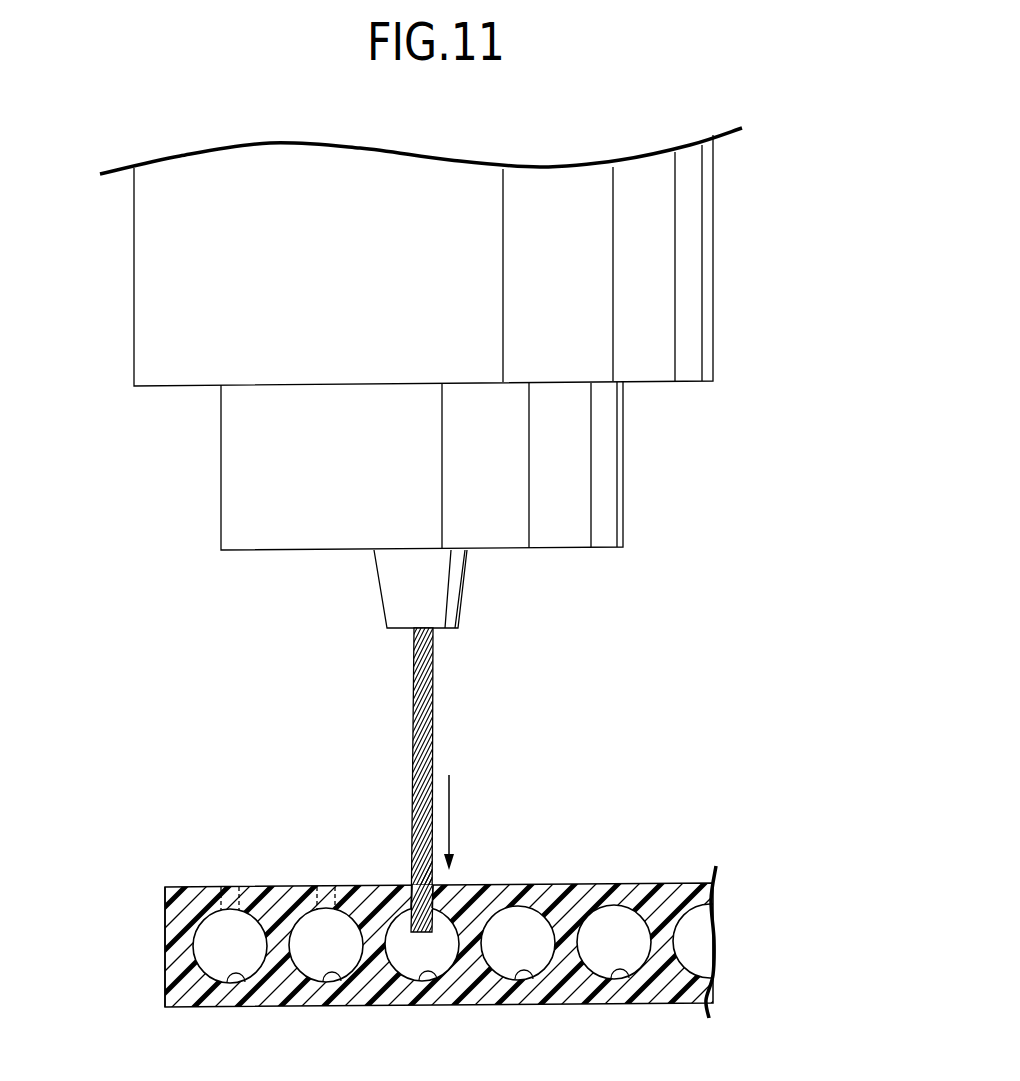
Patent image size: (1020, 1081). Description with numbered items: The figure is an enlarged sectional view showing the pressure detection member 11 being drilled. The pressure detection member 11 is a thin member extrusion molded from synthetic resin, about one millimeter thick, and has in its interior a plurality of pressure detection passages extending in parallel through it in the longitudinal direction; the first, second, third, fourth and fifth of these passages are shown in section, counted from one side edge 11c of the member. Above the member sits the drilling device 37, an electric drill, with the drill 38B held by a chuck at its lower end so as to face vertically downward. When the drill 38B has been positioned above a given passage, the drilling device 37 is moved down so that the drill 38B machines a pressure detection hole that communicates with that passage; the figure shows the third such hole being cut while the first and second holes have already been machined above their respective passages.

The drilling device 37 is at (158, 316).
The drill 38B is at (412, 718).
The pressure detection member 11 is at (608, 866).
The side edge 11c is at (163, 923).